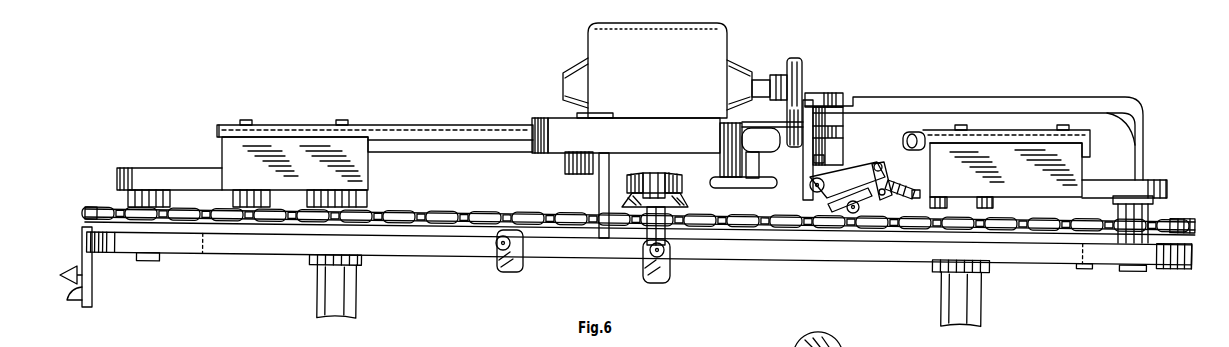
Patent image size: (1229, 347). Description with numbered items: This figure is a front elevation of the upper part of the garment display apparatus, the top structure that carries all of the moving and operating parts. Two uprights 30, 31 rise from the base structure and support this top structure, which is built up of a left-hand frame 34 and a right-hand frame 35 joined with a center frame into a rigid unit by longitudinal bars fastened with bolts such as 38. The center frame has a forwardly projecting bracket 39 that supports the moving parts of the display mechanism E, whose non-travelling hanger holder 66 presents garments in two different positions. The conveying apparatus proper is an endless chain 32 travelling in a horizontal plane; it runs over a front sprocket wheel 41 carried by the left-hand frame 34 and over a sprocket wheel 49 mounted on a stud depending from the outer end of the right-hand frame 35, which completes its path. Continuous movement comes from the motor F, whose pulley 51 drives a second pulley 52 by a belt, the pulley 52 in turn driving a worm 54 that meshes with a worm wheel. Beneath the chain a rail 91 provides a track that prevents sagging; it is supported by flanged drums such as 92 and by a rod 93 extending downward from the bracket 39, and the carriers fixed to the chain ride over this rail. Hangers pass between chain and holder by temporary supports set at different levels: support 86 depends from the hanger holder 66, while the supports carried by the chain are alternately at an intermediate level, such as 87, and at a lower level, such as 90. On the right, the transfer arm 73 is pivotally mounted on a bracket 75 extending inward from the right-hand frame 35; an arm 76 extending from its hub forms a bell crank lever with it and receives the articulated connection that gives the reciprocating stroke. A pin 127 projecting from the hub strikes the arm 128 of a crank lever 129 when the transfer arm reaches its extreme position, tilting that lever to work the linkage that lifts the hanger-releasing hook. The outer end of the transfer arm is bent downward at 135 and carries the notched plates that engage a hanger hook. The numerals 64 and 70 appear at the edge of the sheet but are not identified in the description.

The upright 30 is at (350, 310).
The upright 31 is at (978, 302).
The endless chain 32 is at (470, 195).
The left-hand frame 34 is at (366, 180).
The right-hand frame 35 is at (449, 125).
The bolt 38 is at (340, 122).
The forwardly projecting bracket 39 is at (540, 153).
The front sprocket wheel 41 is at (113, 213).
The sprocket wheel 49 is at (1190, 210).
The pulley 51 is at (802, 73).
The pulley 52 is at (794, 57).
The worm 54 is at (844, 339).
The part 64 is at (191, 344).
The hanger holder 66 is at (649, 232).
The part 70 is at (228, 343).
The transfer arm 73 is at (991, 106).
The bracket 75 is at (912, 170).
The arm 76 is at (843, 138).
The temporary support 86 is at (671, 274).
The temporary support 87 is at (512, 262).
The temporary support 90 is at (80, 298).
The rail 91 is at (828, 238).
The flanged drum 92 is at (186, 258).
The rod 93 is at (599, 191).
The pin 127 is at (824, 160).
The arm 128 is at (812, 178).
The crank lever 129 is at (812, 192).
The downwardly bent outer end 135 is at (884, 200).
The display mechanism E is at (671, 143).
The motor F is at (675, 70).